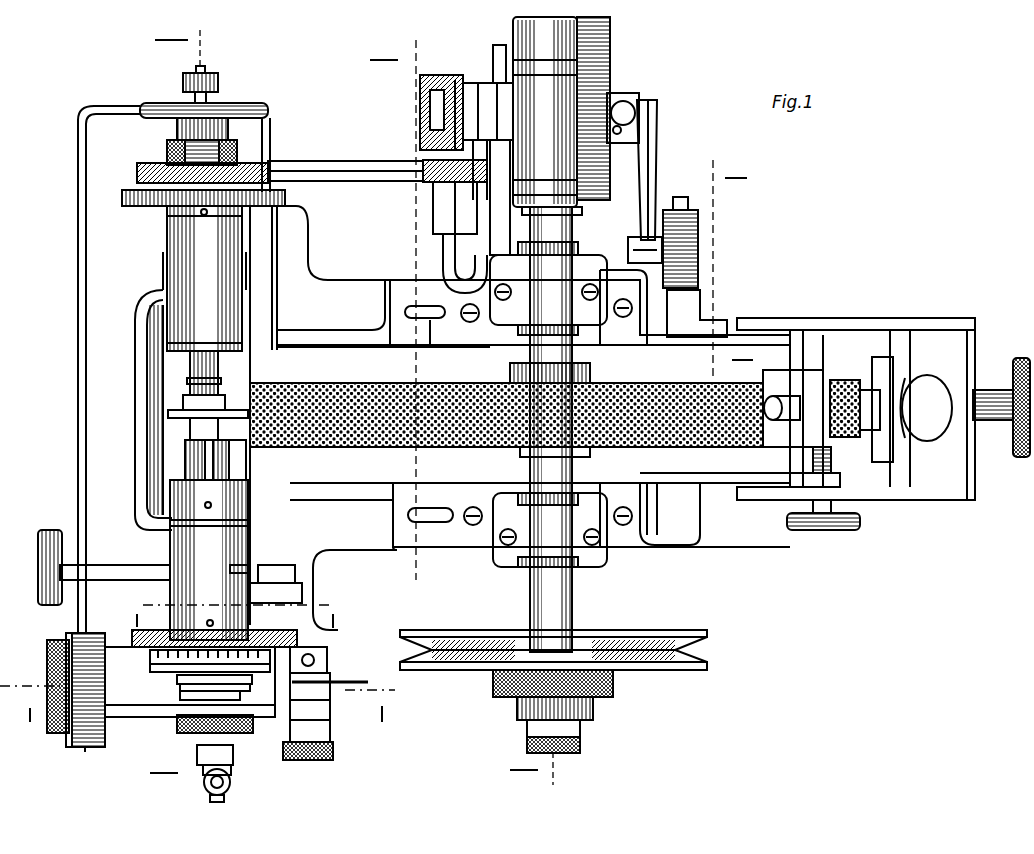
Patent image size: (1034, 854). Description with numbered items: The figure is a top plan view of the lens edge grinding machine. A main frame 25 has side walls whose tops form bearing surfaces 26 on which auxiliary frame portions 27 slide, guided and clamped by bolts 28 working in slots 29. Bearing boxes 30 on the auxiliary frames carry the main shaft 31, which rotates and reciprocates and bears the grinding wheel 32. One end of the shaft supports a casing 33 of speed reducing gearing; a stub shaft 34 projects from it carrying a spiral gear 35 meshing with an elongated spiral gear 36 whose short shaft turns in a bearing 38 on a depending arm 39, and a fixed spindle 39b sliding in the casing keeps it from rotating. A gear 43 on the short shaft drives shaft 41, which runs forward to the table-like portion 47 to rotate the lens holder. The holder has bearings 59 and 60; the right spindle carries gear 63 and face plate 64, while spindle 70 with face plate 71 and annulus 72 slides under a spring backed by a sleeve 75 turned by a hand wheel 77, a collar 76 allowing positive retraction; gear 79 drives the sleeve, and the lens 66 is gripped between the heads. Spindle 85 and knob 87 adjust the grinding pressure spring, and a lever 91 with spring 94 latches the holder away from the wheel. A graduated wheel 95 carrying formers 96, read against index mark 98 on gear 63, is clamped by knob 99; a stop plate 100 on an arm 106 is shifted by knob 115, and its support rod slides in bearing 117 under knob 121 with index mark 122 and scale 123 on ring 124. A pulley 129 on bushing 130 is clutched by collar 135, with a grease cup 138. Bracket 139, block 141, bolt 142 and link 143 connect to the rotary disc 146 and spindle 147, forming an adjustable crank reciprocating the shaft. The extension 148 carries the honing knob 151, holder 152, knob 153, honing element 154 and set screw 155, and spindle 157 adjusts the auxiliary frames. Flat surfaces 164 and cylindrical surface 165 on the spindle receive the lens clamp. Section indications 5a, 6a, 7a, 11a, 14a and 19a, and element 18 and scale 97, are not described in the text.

The section line 5a is at (177, 412).
The section line 6a is at (467, 411).
The section line 7a is at (729, 266).
The section line 11a is at (210, 688).
The section line 14a is at (236, 607).
The eye bolt 19a is at (230, 796).
The clamp plate 18 is at (256, 168).
The main frame 25 is at (330, 290).
The bearing surfaces 26 is at (398, 302).
The auxiliary frame portions 27 is at (448, 264).
The bolts 28 is at (470, 323).
The slots 29 is at (430, 320).
The bearing boxes 30 is at (570, 266).
The main shaft 31 is at (568, 232).
The grinding element or wheel 32 is at (478, 448).
The casing 33 is at (598, 75).
The stub shaft 34 is at (490, 84).
The spiral gear 35 is at (455, 80).
The elongated spiral gear 36 is at (437, 80).
The bearing 38 is at (433, 200).
The arm or bracket 39 is at (445, 220).
The relatively fixed spindle 39b is at (500, 45).
The shaft 41 is at (380, 162).
The gear 43 is at (400, 182).
The table-like portion 47 is at (88, 270).
The bearing 59 is at (170, 528).
The bearing 60 is at (180, 232).
The gear 63 is at (133, 635).
The lens holding face plate or head 64 is at (232, 450).
The lens 66 is at (183, 403).
The lens holding spindle 70 is at (190, 360).
The complementary face plate or head 71 is at (187, 383).
The lens gripping annulus 72 is at (238, 410).
The second sleeve 75 is at (168, 147).
The collar 76 is at (216, 80).
The hand piece or wheel 77 is at (258, 112).
The driving gear 79 is at (287, 198).
The spindle 85 is at (160, 566).
The finger piece or knob 87 is at (40, 560).
The lever 91 is at (280, 583).
The spring 94 is at (250, 570).
The wheel 95 is at (178, 678).
The formers or templet plates 96 is at (182, 695).
The dial 97 is at (150, 660).
The index mark 98 is at (206, 624).
The knob 99 is at (238, 733).
The stop plate 100 is at (345, 680).
The arm 106 is at (312, 650).
The knob 115 is at (334, 748).
The bearing 117 is at (166, 718).
The hand piece or knob 121 is at (55, 735).
The index mark 122 is at (100, 726).
The scale 123 is at (48, 646).
The ring 124 is at (90, 749).
The pulley 129 is at (700, 670).
The bushing 130 is at (595, 708).
The collar 135 is at (493, 680).
The grease cup 138 is at (582, 745).
The bracket 139 is at (700, 300).
The block 141 is at (700, 248).
The bolt 142 is at (683, 197).
The link 143 is at (660, 160).
The rotary disc 146 is at (612, 36).
The spindle 147 is at (648, 100).
The rearward extension 148 is at (930, 500).
The adjusting knob 151 is at (925, 420).
The holder 152 is at (790, 370).
The knob 153 is at (840, 531).
The honing element 154 is at (845, 380).
The set screw 155 is at (775, 420).
The spindle 157 is at (1000, 421).
The flat surfaces 164 is at (190, 452).
The spindle surface 165 is at (190, 428).